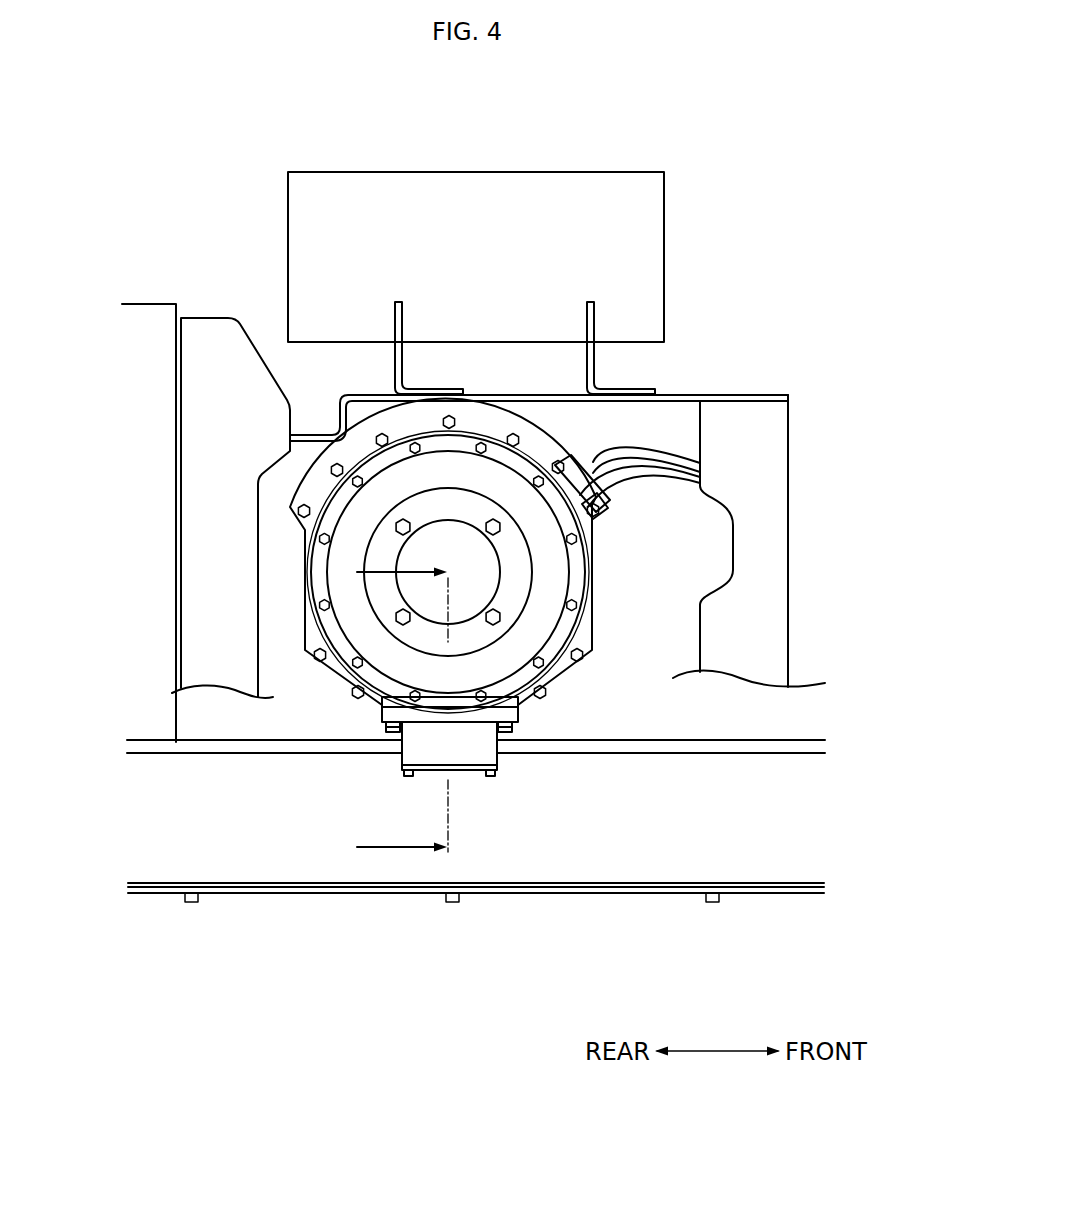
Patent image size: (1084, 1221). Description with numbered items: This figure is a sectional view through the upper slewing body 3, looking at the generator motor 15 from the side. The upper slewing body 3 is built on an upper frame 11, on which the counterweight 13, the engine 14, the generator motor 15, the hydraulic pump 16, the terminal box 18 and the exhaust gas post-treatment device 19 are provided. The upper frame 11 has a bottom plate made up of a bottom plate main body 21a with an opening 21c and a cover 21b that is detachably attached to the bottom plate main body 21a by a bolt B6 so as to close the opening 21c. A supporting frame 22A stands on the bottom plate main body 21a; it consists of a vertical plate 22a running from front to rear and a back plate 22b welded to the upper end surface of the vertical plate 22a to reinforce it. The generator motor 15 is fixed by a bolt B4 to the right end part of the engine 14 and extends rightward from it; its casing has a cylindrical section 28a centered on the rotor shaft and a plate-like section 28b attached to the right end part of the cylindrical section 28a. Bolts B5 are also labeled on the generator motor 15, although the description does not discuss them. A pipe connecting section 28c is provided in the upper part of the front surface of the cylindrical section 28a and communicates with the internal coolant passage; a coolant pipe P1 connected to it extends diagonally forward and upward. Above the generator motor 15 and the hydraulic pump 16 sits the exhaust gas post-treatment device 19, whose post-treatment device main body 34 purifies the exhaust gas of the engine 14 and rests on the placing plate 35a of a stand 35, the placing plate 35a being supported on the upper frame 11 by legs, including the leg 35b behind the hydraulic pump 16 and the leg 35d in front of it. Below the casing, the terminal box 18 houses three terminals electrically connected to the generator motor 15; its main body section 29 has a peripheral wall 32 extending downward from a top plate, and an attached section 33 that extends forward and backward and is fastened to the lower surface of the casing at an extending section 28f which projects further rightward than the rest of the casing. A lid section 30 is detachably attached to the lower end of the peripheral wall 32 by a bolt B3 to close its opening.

The upper slewing body 3 is at (718, 131).
The exhaust gas post-treatment device 19 is at (268, 233).
The counterweight 13 is at (143, 304).
The post-treatment device main body 34 is at (652, 271).
The stand 35 is at (541, 508).
The placing plate 35a is at (742, 400).
The leg 35b is at (262, 398).
The leg 35d is at (780, 476).
The bolt B4 is at (516, 434).
The generator motor 15 is at (534, 463).
The cylindrical section 28a is at (472, 558).
The coolant pipe P1 is at (675, 468).
The bolt B5 is at (485, 516).
The plate-like section 28b is at (305, 551).
The hydraulic pump 16 is at (472, 549).
The pipe connecting section 28c is at (587, 518).
The engine 14 is at (660, 613).
The extending section 28f is at (505, 716).
The attached section 33 is at (386, 728).
The back plate 22b is at (692, 748).
The vertical plate 22a is at (721, 771).
The supporting frame 22A is at (789, 691).
The main body section 29 is at (487, 749).
The peripheral wall 32 is at (517, 754).
The bolt B3 is at (405, 774).
The lid section 30 is at (441, 778).
The terminal box 18 is at (514, 789).
The cover 21b is at (233, 882).
The bottom plate main body 21a is at (272, 897).
The opening 21c is at (346, 925).
The bolt B6 is at (192, 904).
The upper frame 11 is at (144, 938).